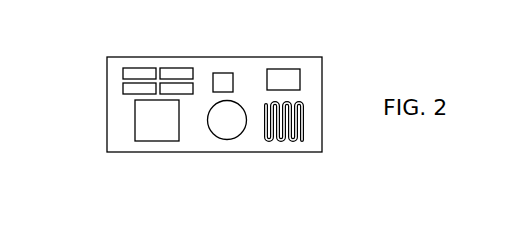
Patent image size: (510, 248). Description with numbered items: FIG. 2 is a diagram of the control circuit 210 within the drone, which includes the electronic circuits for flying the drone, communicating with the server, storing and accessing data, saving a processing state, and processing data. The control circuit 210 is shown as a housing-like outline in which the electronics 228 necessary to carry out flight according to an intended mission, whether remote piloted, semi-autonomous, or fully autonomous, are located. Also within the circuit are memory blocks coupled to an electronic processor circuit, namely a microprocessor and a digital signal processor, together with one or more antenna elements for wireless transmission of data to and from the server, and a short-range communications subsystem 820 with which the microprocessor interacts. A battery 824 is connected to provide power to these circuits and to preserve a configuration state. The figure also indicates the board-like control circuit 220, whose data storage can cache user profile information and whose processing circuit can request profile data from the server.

The control circuit 210 is at (315, 70).
The control circuit 220 is at (192, 152).
The electronics 228 is at (218, 75).
The short-range communications subsystem 820 is at (297, 73).
The battery 824 is at (223, 138).